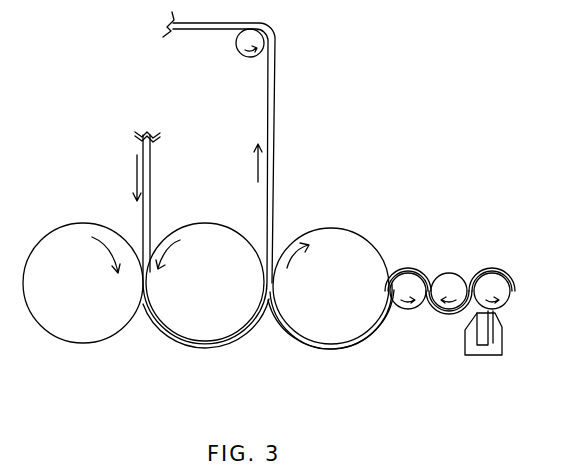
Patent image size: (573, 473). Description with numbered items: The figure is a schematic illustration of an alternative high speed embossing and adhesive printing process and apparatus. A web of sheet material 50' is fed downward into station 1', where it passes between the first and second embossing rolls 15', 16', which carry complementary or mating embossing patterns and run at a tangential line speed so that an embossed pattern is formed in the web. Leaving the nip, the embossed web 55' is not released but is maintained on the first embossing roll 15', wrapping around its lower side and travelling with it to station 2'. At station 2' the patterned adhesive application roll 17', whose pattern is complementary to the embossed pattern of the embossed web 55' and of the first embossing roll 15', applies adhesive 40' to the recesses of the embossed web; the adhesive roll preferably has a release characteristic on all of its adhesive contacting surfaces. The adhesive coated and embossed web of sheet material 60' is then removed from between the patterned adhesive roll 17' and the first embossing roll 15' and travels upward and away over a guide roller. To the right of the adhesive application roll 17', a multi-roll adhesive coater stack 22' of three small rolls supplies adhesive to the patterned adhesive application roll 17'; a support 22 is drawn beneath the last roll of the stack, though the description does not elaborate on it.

The second embossing roll 16' is at (83, 311).
The first embossing roll 15' is at (205, 306).
The patterned adhesive application roll 17' is at (331, 315).
The web of sheet material 50' is at (162, 178).
The adhesive coated and embossed web of sheet material 60' is at (301, 86).
The embossed web 55' is at (206, 343).
The adhesive 40' is at (331, 339).
The station 1' is at (124, 358).
The station 2' is at (271, 354).
The multi-roll adhesive coater stack 22' is at (450, 268).
The roller support bracket 22 is at (465, 371).